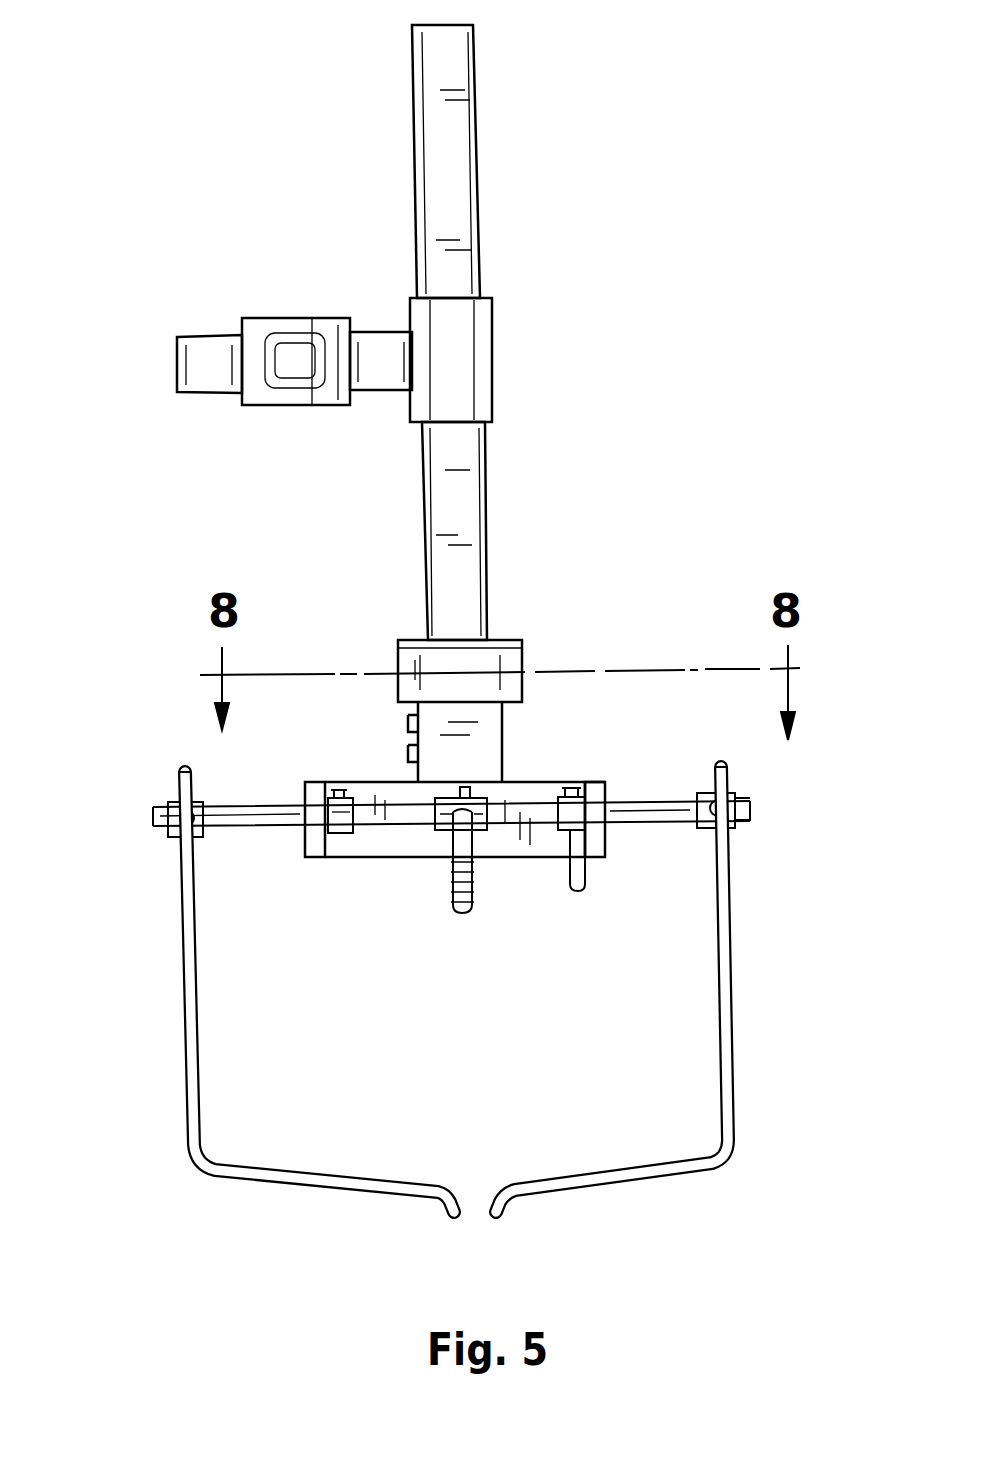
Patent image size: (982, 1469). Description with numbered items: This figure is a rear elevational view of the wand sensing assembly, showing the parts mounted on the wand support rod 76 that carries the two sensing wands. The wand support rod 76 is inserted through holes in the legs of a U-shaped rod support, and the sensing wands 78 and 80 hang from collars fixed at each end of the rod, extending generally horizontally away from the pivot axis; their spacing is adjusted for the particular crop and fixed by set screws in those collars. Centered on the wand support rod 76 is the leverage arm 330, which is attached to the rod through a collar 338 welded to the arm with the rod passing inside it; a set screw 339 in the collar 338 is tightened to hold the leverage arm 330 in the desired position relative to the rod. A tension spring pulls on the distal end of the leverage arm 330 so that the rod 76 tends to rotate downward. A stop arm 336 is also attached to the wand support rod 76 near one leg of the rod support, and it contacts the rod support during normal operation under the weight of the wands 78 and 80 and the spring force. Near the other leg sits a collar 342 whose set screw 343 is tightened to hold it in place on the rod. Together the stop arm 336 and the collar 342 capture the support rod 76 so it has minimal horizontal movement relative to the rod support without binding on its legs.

The wand support rod 76 is at (668, 795).
The sensing wand 78 is at (188, 1090).
The sensing wand 80 is at (742, 1047).
The leverage arm 330 is at (453, 868).
The stop arm 336 is at (585, 873).
The collar 338 is at (450, 798).
The set screw 339 is at (465, 787).
The collar 342 is at (342, 833).
The set screw 343 is at (334, 790).